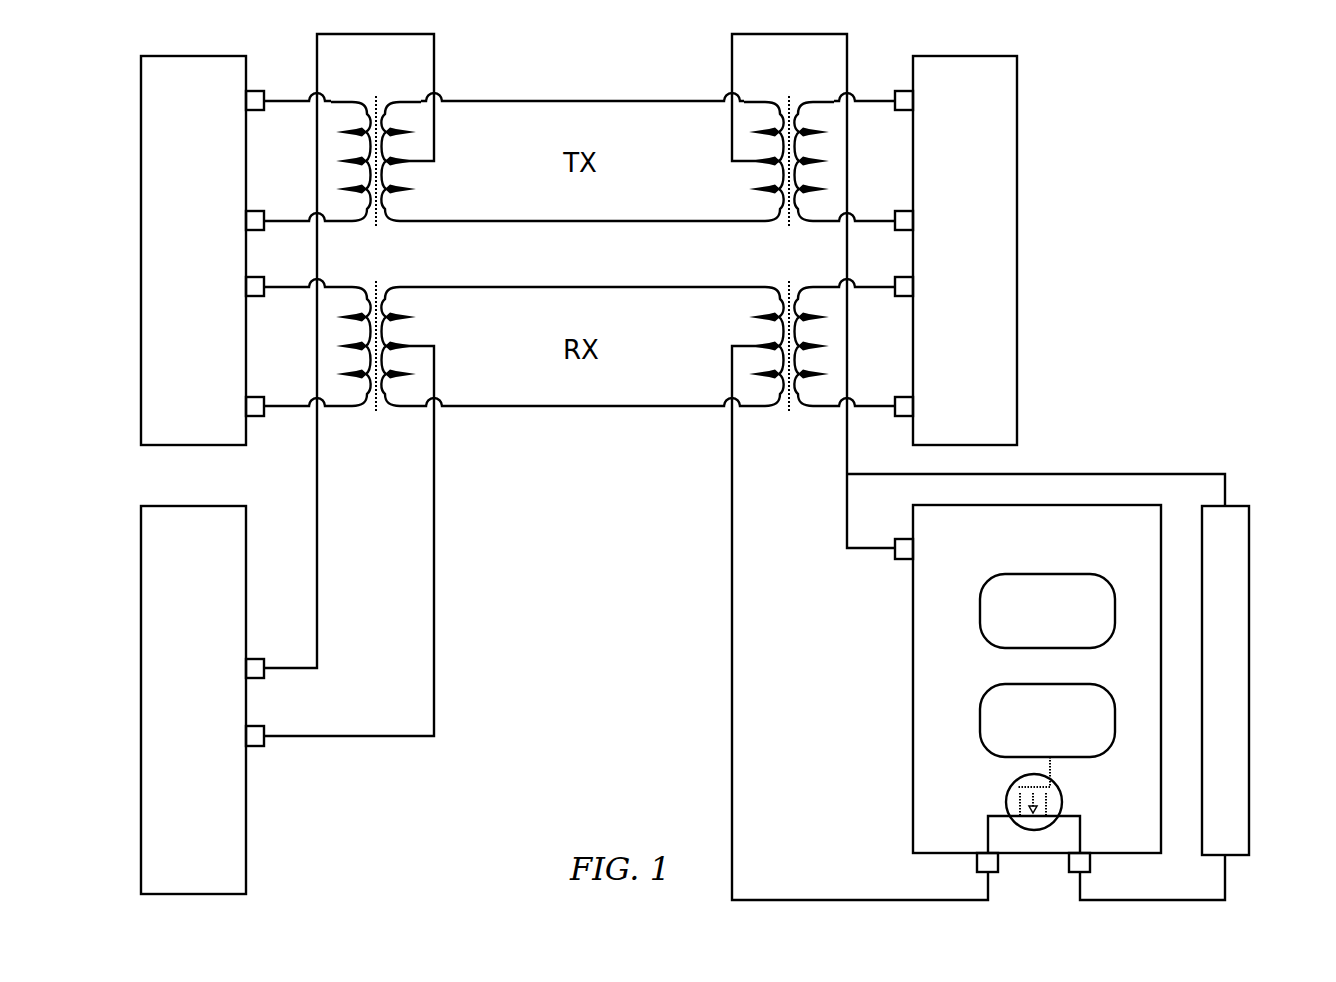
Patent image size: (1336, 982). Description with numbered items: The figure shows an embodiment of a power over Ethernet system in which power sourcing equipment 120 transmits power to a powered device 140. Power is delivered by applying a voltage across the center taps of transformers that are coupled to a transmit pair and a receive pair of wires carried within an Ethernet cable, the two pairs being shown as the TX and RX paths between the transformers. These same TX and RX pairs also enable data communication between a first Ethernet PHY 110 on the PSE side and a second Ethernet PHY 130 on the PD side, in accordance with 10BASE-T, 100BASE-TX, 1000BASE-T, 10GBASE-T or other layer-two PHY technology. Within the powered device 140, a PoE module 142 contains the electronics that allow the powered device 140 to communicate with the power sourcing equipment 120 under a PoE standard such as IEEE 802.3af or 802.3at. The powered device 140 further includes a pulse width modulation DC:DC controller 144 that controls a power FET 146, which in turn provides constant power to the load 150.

The Ethernet PHY 110 is at (141, 252).
The power sourcing equipment 120 is at (141, 700).
The Ethernet PHY 130 is at (1017, 248).
The powered device 140 is at (995, 688).
The PoE module 142 is at (1016, 574).
The pulse width modulation DC:DC controller 144 is at (998, 684).
The power FET 146 is at (1007, 806).
The load 150 is at (1249, 670).